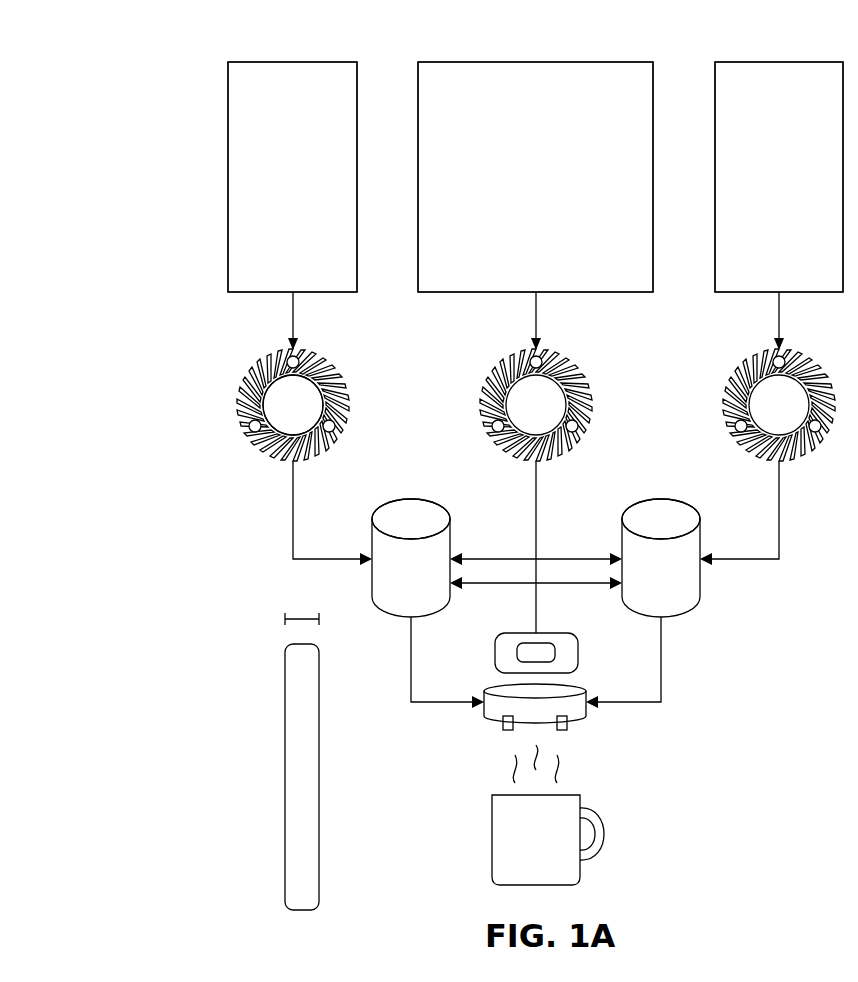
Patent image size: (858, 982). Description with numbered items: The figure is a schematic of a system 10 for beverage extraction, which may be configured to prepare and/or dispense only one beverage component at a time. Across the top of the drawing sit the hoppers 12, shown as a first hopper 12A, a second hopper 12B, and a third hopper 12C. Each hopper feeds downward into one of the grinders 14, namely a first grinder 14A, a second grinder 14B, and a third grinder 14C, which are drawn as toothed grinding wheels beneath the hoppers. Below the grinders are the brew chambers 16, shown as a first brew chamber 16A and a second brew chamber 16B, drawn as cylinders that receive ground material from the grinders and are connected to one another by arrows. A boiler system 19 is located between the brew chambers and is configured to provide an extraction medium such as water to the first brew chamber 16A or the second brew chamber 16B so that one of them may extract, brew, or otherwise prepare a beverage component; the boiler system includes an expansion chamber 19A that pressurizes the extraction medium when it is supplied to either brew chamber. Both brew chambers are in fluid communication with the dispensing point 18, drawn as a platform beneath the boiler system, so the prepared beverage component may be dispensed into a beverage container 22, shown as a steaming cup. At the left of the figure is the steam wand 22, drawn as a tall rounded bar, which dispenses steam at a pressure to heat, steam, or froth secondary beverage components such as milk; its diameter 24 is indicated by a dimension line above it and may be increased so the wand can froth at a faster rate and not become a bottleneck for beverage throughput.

The system for beverage extraction 10 is at (84, 78).
The hoppers 12 is at (188, 170).
The first hopper 12A is at (292, 62).
The second hopper 12B is at (535, 62).
The third hopper 12C is at (780, 62).
The grinders 14 is at (172, 410).
The first grinder 14A is at (261, 372).
The second grinder 14B is at (504, 372).
The third grinder 14C is at (746, 370).
The brew chambers 16 is at (258, 573).
The first brew chamber 16A is at (412, 499).
The second brew chamber 16B is at (662, 499).
The dispensing point 18 is at (484, 712).
The boiler system 19 is at (578, 655).
The expansion chamber 19A is at (517, 652).
The steam wand 22 is at (492, 836).
The diameter 24 is at (300, 616).